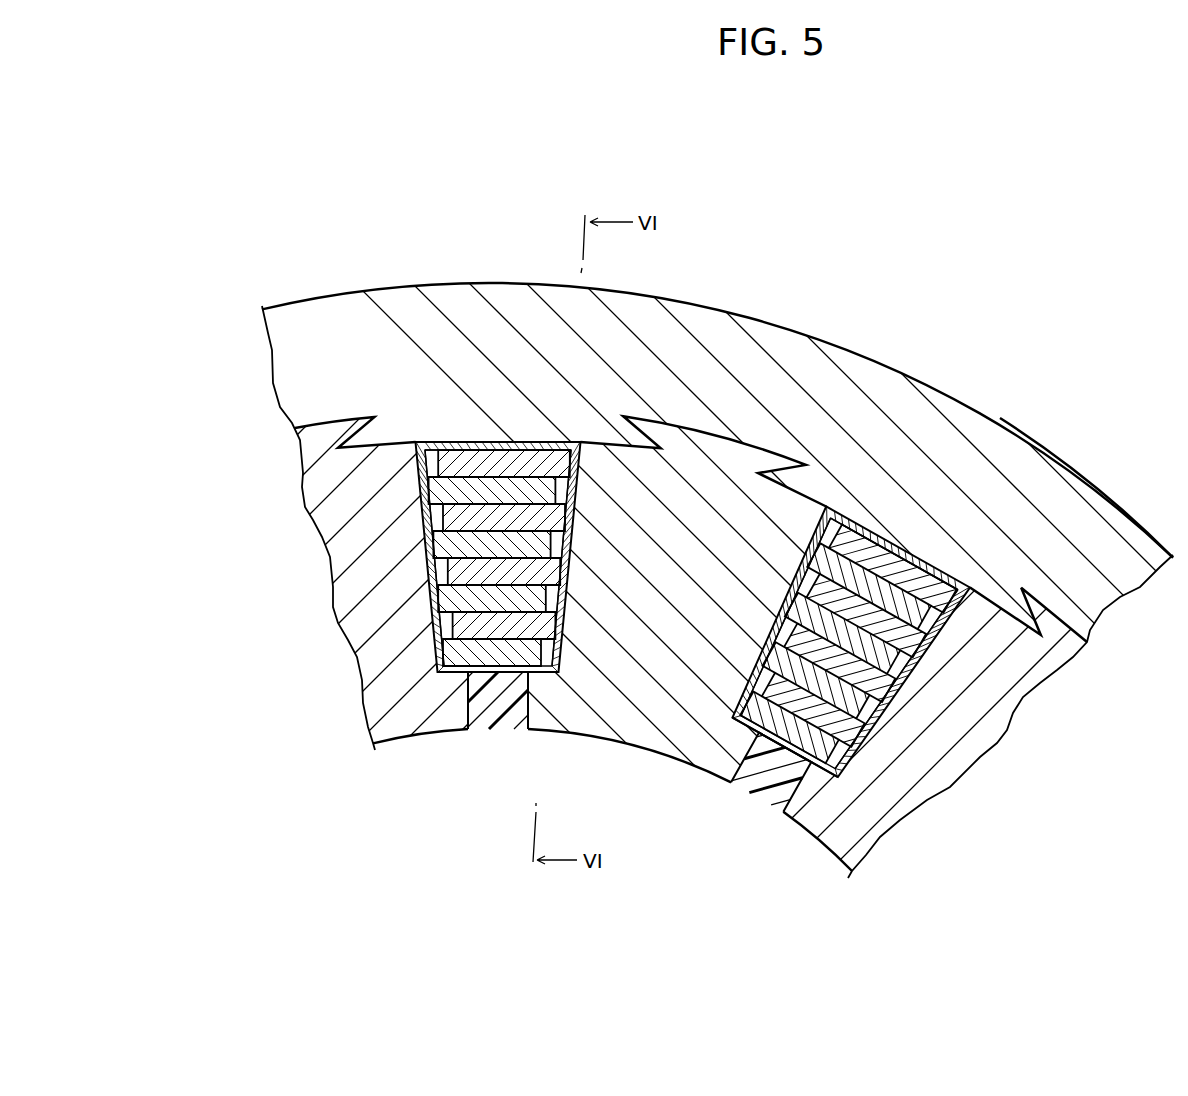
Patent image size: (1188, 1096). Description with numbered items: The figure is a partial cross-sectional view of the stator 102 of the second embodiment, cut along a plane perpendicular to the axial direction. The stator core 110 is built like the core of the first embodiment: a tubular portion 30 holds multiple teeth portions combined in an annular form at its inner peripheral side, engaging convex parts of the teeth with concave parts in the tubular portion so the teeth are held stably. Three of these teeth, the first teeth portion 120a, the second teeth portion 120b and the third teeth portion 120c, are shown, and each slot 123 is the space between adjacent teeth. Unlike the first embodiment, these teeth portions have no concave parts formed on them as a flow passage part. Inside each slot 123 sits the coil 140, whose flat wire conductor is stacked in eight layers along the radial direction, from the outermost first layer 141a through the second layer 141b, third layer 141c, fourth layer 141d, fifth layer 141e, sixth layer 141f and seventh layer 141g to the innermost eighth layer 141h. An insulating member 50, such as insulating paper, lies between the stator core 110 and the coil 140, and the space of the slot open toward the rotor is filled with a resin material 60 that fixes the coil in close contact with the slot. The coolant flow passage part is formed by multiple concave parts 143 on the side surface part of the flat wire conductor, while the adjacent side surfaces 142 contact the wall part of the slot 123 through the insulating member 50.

The stator 102 is at (968, 297).
The tubular portion 30 is at (990, 450).
The stator core 110 is at (805, 319).
The first teeth portion 120a is at (374, 714).
The second teeth portion 120b is at (652, 742).
The third teeth portion 120c is at (836, 845).
The slot 123 is at (551, 682).
The insulating member 50 is at (485, 448).
The resin material 60 is at (492, 723).
The coil 140 is at (550, 638).
The first layer 141a is at (455, 458).
The second layer 141b is at (452, 485).
The third layer 141c is at (455, 512).
The fourth layer 141d is at (452, 539).
The fifth layer 141e is at (458, 566).
The sixth layer 141f is at (455, 593).
The seventh layer 141g is at (460, 620).
The eighth layer 141h is at (458, 647).
The side surfaces 142 is at (580, 448).
The concave parts 143 is at (573, 492).